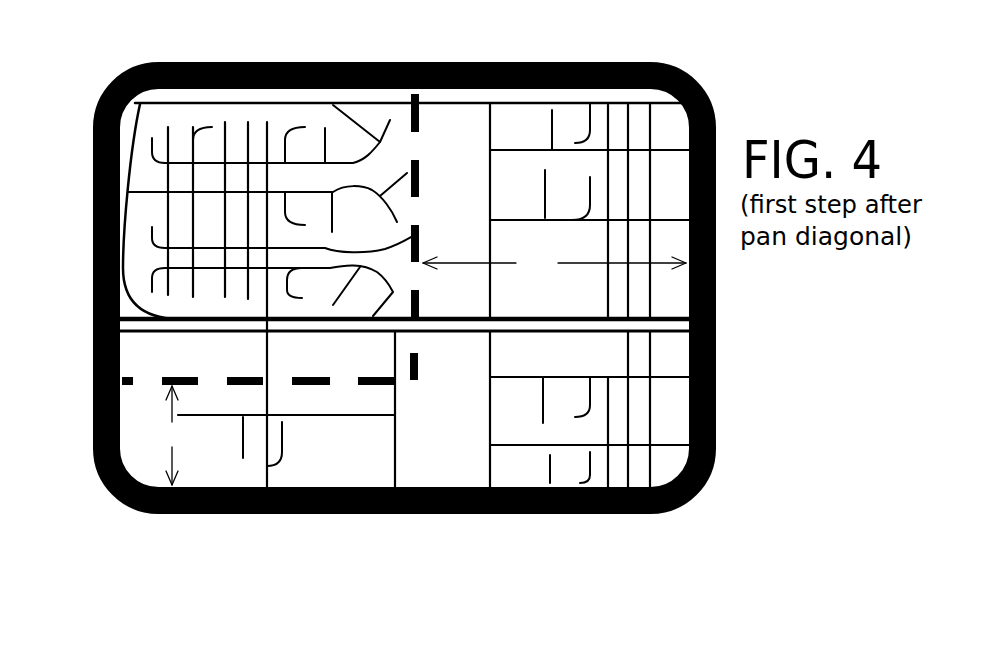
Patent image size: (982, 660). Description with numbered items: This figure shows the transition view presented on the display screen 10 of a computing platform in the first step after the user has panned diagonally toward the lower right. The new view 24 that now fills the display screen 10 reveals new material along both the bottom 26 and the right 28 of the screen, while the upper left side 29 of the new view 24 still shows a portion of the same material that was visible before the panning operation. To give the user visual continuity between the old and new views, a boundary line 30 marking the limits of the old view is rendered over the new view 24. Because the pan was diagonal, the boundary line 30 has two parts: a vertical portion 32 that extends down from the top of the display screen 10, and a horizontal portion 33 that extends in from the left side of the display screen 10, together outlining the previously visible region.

The display screen 10 is at (727, 352).
The new view 24 is at (470, 146).
The bottom 26 is at (165, 435).
The right 28 is at (554, 263).
The upper left side 29 is at (373, 231).
The boundary line 30 is at (163, 377).
The vertical portion 32 is at (427, 117).
The horizontal portion 33 is at (368, 392).